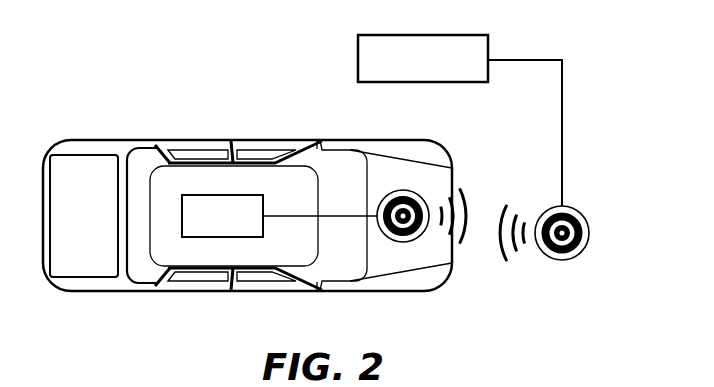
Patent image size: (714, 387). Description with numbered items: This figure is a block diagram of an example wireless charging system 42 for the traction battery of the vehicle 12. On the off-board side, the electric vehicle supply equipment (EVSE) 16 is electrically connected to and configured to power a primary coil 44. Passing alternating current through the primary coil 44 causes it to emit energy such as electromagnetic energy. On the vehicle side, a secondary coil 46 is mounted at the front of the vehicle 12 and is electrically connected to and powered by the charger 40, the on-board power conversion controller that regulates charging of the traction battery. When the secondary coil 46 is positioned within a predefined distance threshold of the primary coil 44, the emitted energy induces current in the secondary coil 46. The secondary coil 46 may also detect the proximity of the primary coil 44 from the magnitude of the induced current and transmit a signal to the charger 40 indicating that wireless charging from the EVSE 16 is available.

The wireless charging system 42 is at (115, 89).
The vehicle 12 is at (220, 140).
The charger 40 is at (217, 195).
The secondary coil 46 is at (400, 189).
The electric vehicle supply equipment (EVSE) 16 is at (422, 35).
The primary coil 44 is at (574, 208).